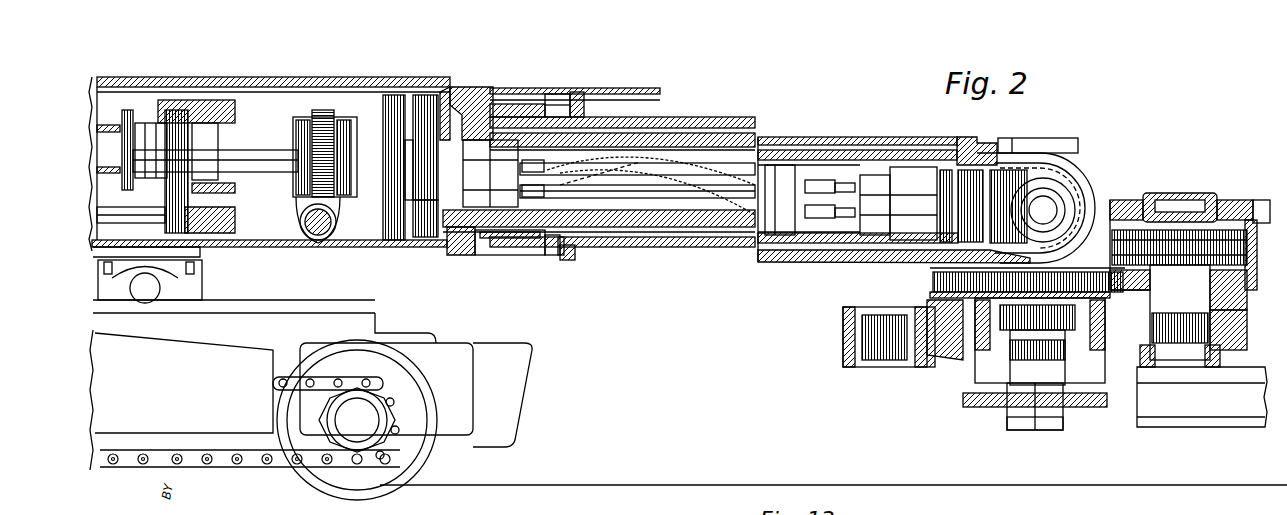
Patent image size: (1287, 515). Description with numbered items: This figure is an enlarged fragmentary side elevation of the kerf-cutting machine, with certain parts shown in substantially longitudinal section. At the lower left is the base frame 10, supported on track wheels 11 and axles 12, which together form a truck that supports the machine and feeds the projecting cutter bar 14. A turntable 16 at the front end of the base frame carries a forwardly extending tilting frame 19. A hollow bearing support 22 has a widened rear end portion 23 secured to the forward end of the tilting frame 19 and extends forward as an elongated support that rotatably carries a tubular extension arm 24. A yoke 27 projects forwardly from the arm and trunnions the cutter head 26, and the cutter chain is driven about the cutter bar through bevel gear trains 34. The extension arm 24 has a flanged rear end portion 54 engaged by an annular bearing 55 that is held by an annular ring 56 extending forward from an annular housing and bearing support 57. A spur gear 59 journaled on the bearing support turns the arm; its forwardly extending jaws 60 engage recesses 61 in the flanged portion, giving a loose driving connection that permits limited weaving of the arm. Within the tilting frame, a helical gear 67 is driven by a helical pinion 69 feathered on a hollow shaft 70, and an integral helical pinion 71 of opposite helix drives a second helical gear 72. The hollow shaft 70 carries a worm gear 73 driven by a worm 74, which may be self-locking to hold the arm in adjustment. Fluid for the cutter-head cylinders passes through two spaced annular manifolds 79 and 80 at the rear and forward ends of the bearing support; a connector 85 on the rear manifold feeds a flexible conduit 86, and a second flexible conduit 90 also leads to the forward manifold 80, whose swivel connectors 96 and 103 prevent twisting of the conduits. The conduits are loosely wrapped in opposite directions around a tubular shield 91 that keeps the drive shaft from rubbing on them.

The base frame 10 is at (762, 252).
The track wheels 11 is at (393, 485).
The axles 12 is at (338, 470).
The cutter bar 14 is at (1237, 427).
The turntable 16 is at (275, 300).
The tilting frame 19 is at (296, 77).
The hollow bearing support 22 is at (641, 133).
The widened rear end portion 23 is at (477, 140).
The tubular extension arm 24 is at (708, 115).
The cutter head 26 is at (880, 307).
The yoke 27 is at (1064, 140).
The bevel gear trains 34 is at (1007, 167).
The flanged rear end portion 54 is at (577, 105).
The annular bearing 55 is at (562, 258).
The annular ring 56 is at (575, 260).
The annular housing and bearing support 57 is at (503, 256).
The spur gear 59 is at (532, 88).
The jaws 60 is at (560, 98).
The recesses 61 is at (549, 256).
The helical gear 67 is at (408, 95).
The helical pinion 69 is at (388, 95).
The hollow shaft 70 is at (364, 150).
The helical pinion 71 is at (450, 92).
The helical gear 72 is at (422, 237).
The worm gear 73 is at (318, 110).
The worm 74 is at (326, 235).
The annular manifold 79 is at (484, 140).
The annular manifold 80 is at (901, 172).
The connector 85 is at (528, 152).
The flexible conduit 86 is at (586, 158).
The flexible conduit 90 is at (550, 193).
The tubular shield 91 is at (668, 248).
The swivel connector 96 is at (825, 178).
The swivel connector 103 is at (800, 252).